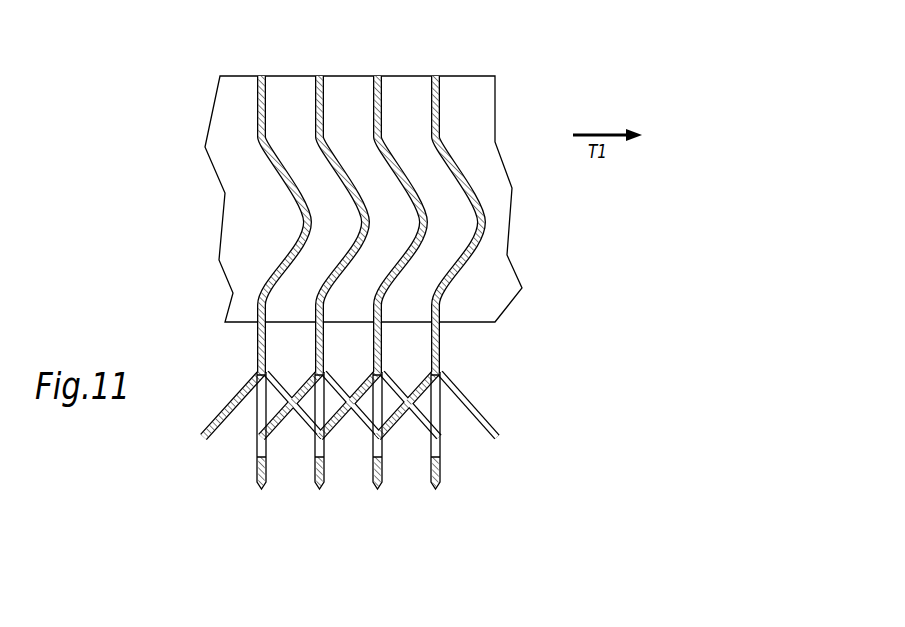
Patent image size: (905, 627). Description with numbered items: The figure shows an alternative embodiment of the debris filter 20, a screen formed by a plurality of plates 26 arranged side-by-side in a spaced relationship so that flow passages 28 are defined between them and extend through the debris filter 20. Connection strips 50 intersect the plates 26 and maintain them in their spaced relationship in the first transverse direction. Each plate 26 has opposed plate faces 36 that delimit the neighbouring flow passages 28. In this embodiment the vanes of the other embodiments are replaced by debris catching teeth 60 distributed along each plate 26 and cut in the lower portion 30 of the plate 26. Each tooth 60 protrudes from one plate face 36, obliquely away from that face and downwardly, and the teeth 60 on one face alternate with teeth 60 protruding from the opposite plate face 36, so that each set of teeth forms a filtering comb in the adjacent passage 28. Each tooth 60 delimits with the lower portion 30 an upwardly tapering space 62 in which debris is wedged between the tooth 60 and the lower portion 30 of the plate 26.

The debris filter 20 is at (306, 287).
The plate 26 is at (383, 317).
The flow passage 28 is at (290, 72).
The lower portion 30 is at (383, 480).
The plate face 36 is at (296, 281).
The connection strip 50 is at (503, 212).
The debris catching tooth 60 is at (209, 439).
The upwardly tapering space 62 is at (242, 470).